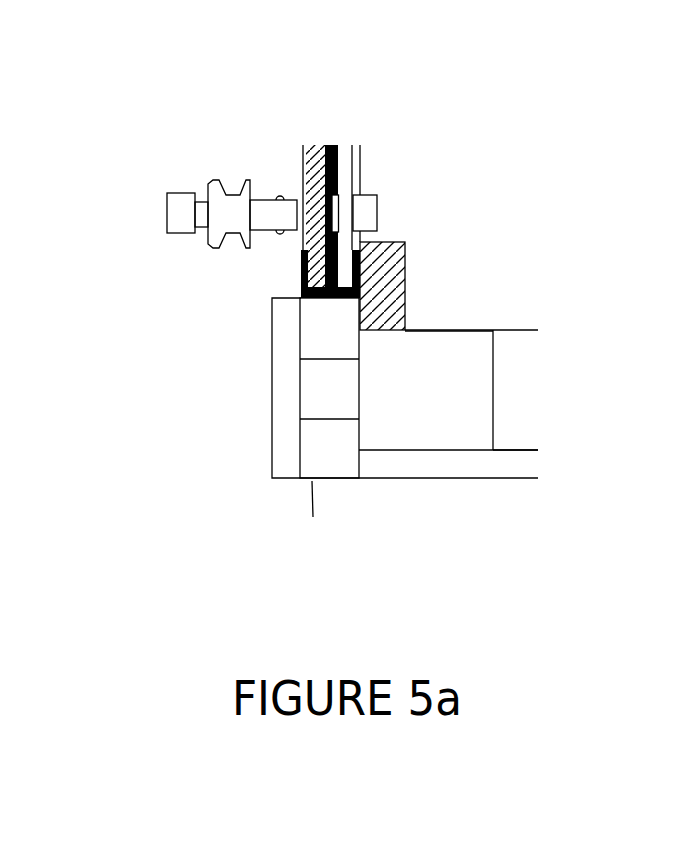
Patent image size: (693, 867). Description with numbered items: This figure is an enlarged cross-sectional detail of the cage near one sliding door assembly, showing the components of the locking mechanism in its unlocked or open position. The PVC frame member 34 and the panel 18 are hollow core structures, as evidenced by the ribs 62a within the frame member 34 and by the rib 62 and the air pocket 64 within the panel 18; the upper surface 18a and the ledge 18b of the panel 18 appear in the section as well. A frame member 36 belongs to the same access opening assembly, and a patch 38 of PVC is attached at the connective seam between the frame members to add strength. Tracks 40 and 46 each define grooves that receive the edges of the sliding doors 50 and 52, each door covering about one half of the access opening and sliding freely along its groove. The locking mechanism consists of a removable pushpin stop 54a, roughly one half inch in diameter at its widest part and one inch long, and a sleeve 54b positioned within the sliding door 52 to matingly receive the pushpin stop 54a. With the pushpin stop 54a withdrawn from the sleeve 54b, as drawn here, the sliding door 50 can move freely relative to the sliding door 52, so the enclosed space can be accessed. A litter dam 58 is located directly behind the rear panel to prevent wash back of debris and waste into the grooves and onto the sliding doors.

The panel 18 is at (397, 450).
The upper surface of base member 18a is at (532, 331).
The ledge of base member 18b is at (532, 448).
The frame member 34 is at (316, 479).
The frame member 36 is at (360, 168).
The patch 38 is at (272, 455).
The track 40 is at (301, 280).
The track 46 is at (324, 146).
The sliding door 50 is at (310, 185).
The sliding door 52 is at (361, 183).
The pushpin stop 54a is at (167, 193).
The sleeve 54b is at (377, 220).
The litter dam 58 is at (405, 265).
The rib 62 is at (493, 380).
The ribs 62a is at (350, 359).
The air pocket 64 is at (453, 397).